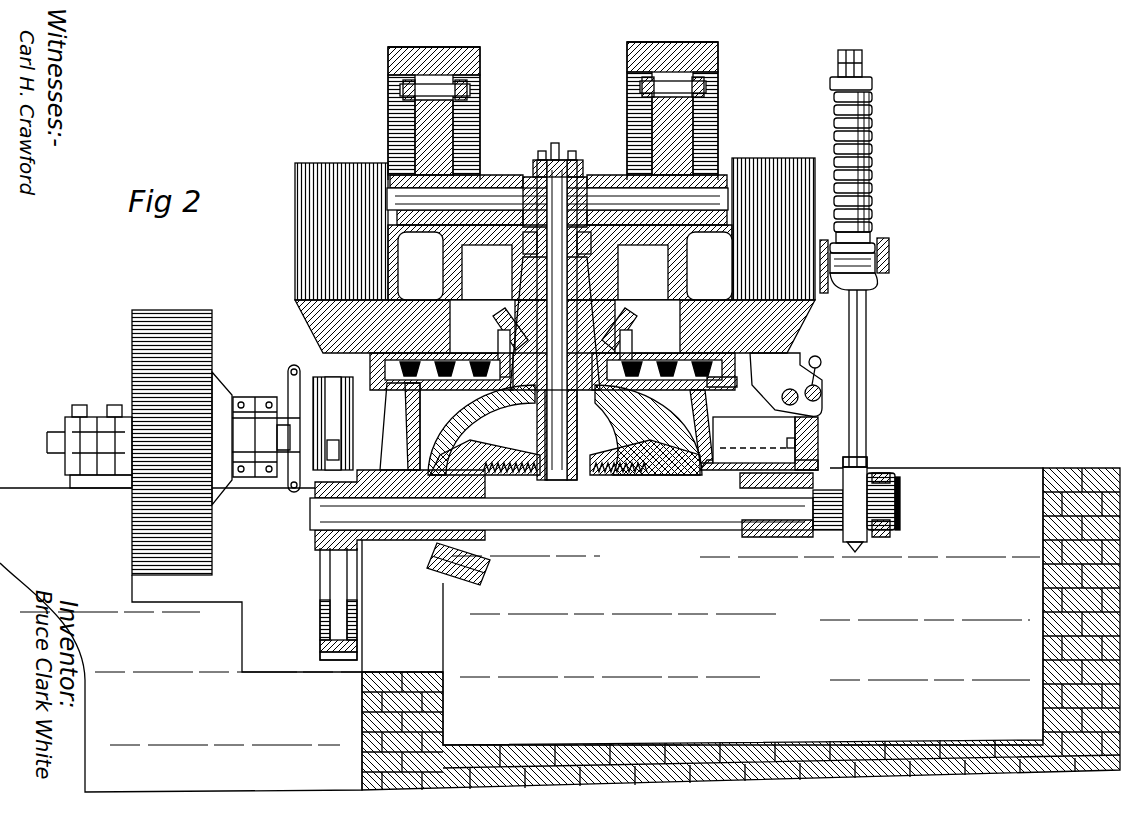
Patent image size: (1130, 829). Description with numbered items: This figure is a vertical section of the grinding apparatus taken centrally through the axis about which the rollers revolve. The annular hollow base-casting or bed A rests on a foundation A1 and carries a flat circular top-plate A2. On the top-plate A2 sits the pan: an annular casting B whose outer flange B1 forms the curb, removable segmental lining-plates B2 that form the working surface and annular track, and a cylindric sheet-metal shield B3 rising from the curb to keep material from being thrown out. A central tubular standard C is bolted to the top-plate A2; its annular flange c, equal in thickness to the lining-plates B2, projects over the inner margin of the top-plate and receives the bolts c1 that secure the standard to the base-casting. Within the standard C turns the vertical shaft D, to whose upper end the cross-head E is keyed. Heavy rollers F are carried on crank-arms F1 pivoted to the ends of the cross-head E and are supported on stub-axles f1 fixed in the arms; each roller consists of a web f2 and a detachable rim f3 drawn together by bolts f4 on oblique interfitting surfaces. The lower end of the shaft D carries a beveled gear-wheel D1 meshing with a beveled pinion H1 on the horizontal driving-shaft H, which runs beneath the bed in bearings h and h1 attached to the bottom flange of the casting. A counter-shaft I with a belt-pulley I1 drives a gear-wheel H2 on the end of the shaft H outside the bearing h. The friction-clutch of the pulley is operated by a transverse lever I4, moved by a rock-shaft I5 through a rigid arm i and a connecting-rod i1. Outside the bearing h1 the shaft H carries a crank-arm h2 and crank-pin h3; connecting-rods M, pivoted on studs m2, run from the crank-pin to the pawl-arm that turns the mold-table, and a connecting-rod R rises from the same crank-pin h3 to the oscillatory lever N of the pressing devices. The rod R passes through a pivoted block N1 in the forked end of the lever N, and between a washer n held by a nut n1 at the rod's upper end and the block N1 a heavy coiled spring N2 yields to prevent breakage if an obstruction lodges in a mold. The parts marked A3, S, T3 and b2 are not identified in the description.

The foundation A1 is at (560, 630).
The base-casting A is at (400, 426).
The top-plate A2 is at (760, 462).
The frame box A3 is at (778, 455).
The annular casting B is at (601, 237).
The outer flange B1 is at (305, 332).
The segmental lining-plates B2 is at (738, 378).
The sheet-metal shield B3 is at (296, 243).
The central tubular standard C is at (580, 268).
The annular flange c is at (546, 435).
The bolts c1 is at (505, 345).
The vertical rotative shaft D is at (484, 430).
The beveled gear-wheel D1 is at (646, 430).
The cross-head E is at (586, 162).
The rollers F is at (460, 47).
The crank-arms F1 is at (512, 175).
The stub-axles f1 is at (557, 195).
The web portion f2 is at (395, 190).
The detachable rim f3 is at (425, 47).
The bolts f4 is at (430, 85).
The driving-shaft H is at (416, 548).
The bearing h is at (396, 548).
The beveled pinion H1 is at (483, 570).
The gear-wheel H2 is at (325, 580).
The bearing h1 is at (800, 538).
The crank-arm h2 is at (828, 510).
The crank-pin h3 is at (895, 508).
The counter-shaft I is at (45, 438).
The belt-pulley I1 is at (188, 426).
The transverse lever I4 is at (292, 462).
The rock-shaft I5 is at (850, 385).
The rigid arm i is at (818, 386).
The connecting-rod i1 is at (310, 366).
The connecting-rods M is at (885, 538).
The pivot-pins m2 is at (882, 473).
The oscillatory lever N is at (892, 242).
The pivoted block N1 is at (885, 242).
The coiled spring N2 is at (871, 140).
The washer n is at (868, 78).
The nut n1 is at (862, 55).
The connecting-rod R is at (867, 332).
The block S is at (818, 445).
The coupling T3 is at (262, 390).
The pin b2 is at (805, 396).